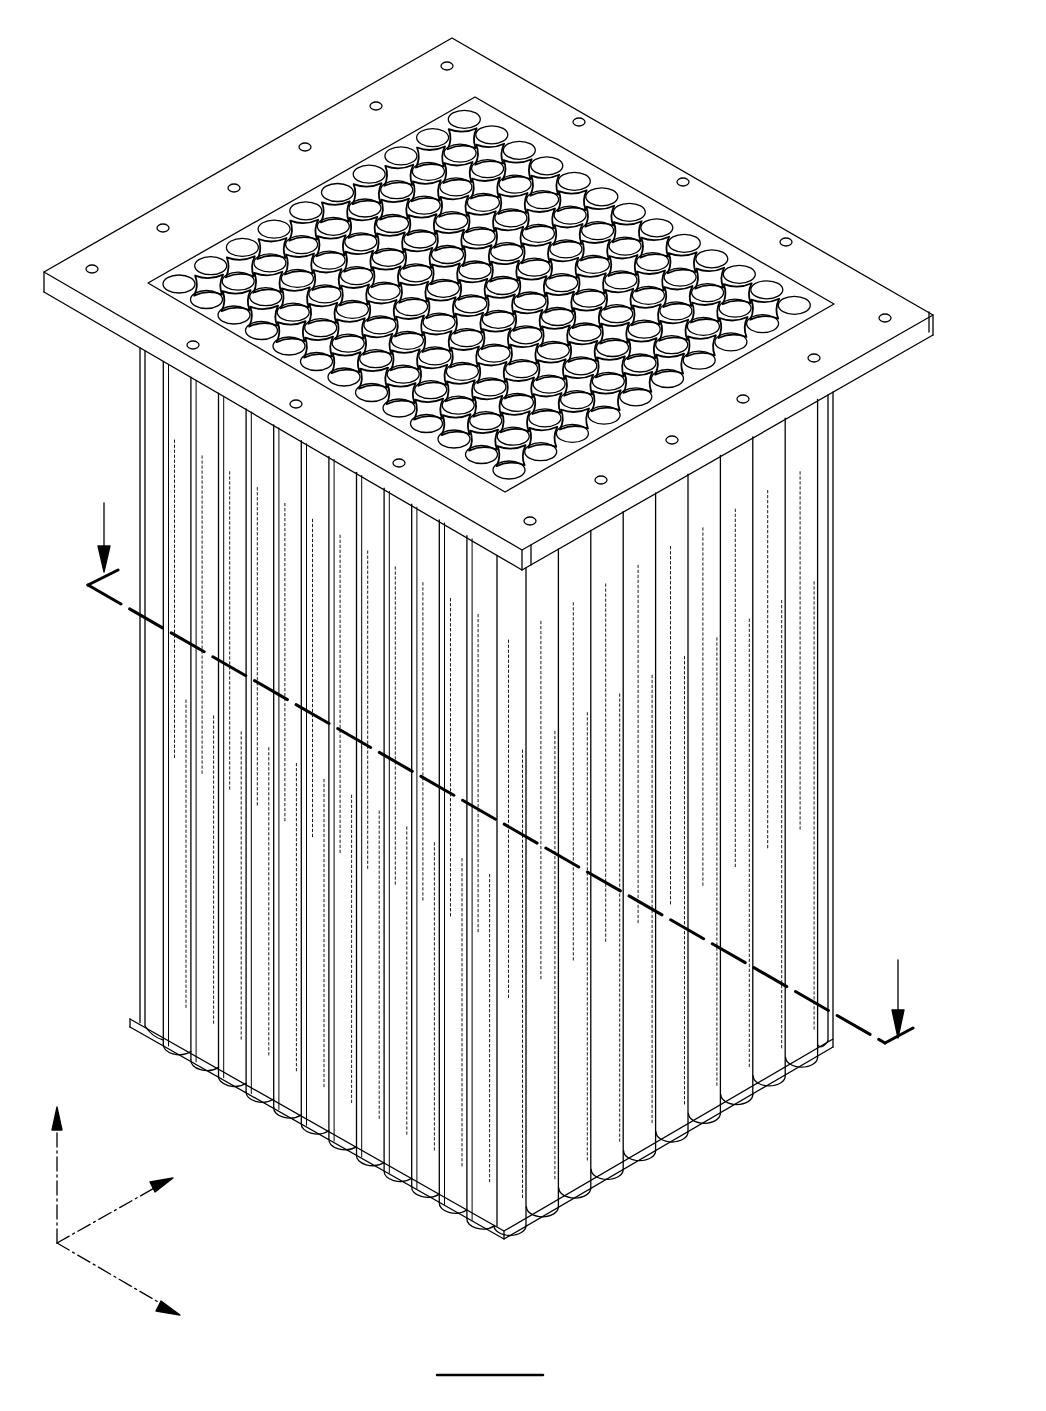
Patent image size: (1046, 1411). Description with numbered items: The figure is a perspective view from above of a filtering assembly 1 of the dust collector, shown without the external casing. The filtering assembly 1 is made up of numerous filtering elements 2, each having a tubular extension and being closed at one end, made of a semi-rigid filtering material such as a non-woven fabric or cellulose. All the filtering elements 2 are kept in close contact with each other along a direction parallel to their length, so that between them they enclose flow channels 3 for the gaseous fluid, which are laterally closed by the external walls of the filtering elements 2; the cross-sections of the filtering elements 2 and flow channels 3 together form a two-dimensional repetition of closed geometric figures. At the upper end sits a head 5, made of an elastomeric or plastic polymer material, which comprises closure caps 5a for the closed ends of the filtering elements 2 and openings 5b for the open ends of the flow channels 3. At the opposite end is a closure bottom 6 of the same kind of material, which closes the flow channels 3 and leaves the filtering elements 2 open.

The filtering assembly 1 is at (878, 662).
The filtering elements 2 is at (393, 1067).
The flow channels 3 is at (465, 278).
The head 5 is at (488, 287).
The closure caps 5a is at (242, 283).
The openings 5b is at (563, 300).
The closure bottom 6 is at (472, 1223).